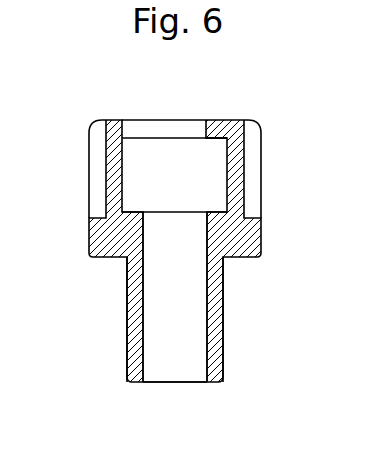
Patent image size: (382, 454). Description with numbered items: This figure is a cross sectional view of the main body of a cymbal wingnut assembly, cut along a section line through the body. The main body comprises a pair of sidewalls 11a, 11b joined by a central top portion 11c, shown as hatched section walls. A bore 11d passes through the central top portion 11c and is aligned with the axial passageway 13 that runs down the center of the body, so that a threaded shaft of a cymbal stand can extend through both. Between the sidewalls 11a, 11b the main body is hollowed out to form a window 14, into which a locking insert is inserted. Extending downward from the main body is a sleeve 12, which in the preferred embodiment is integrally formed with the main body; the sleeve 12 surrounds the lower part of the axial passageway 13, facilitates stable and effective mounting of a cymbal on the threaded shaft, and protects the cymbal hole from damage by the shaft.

The sidewall 11a is at (110, 182).
The sidewall 11b is at (237, 178).
The central top portion 11c is at (223, 121).
The bore 11d is at (167, 126).
The sleeve 12 is at (224, 337).
The axial passageway 13 is at (184, 316).
The window 14 is at (184, 185).